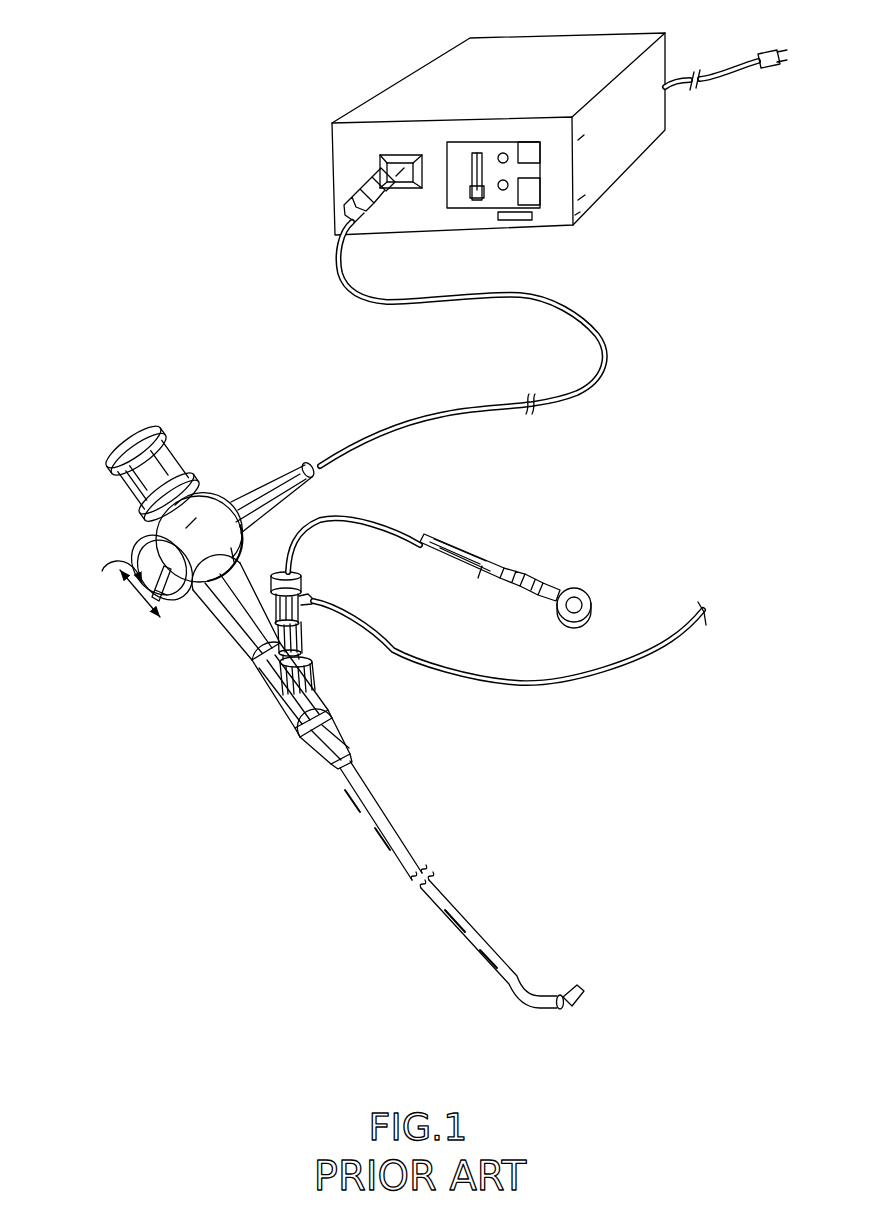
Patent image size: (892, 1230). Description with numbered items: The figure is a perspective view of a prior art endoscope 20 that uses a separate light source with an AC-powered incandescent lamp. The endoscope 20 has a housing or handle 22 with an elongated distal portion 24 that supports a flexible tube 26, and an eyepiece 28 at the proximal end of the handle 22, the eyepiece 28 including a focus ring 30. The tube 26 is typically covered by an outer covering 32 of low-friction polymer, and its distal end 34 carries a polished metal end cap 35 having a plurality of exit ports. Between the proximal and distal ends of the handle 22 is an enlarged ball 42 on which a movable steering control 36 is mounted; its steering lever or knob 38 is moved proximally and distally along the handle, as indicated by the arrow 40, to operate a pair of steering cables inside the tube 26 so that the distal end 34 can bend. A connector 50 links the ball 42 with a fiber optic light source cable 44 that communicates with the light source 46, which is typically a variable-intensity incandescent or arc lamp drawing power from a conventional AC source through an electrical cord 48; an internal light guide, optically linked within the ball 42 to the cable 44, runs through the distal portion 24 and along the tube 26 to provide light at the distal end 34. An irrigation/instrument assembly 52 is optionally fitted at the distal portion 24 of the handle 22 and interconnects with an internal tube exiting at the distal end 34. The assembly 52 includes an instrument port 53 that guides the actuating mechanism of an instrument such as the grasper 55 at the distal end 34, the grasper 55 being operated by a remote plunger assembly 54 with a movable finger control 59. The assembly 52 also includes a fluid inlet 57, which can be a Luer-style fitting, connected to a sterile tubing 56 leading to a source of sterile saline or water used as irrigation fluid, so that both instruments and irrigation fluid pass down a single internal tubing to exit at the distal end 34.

The endoscope 20 is at (206, 495).
The handle 22 is at (228, 645).
The elongated distal portion 24 is at (264, 693).
The flexible tube 26 is at (448, 884).
The eyepiece 28 is at (124, 507).
The focus ring 30 is at (138, 473).
The outer covering 32 is at (416, 852).
The distal end 34 is at (596, 986).
The polished metal end cap 35 is at (562, 994).
The steering control 36 is at (177, 600).
The steering lever 38 is at (108, 584).
The arrow 40 is at (134, 597).
The enlarged ball 42 is at (200, 503).
The fiber optic light source cable 44 is at (358, 448).
The light source 46 is at (455, 76).
The electrical cord 48 is at (729, 70).
The connector 50 is at (300, 462).
The irrigation/instrument assembly 52 is at (316, 643).
The instrument port 53 is at (300, 566).
The remote plunger assembly 54 is at (474, 549).
The grasper 55 is at (581, 988).
The sterile tubing 56 is at (447, 672).
The fluid inlet 57 is at (313, 599).
The movable finger control 59 is at (588, 586).